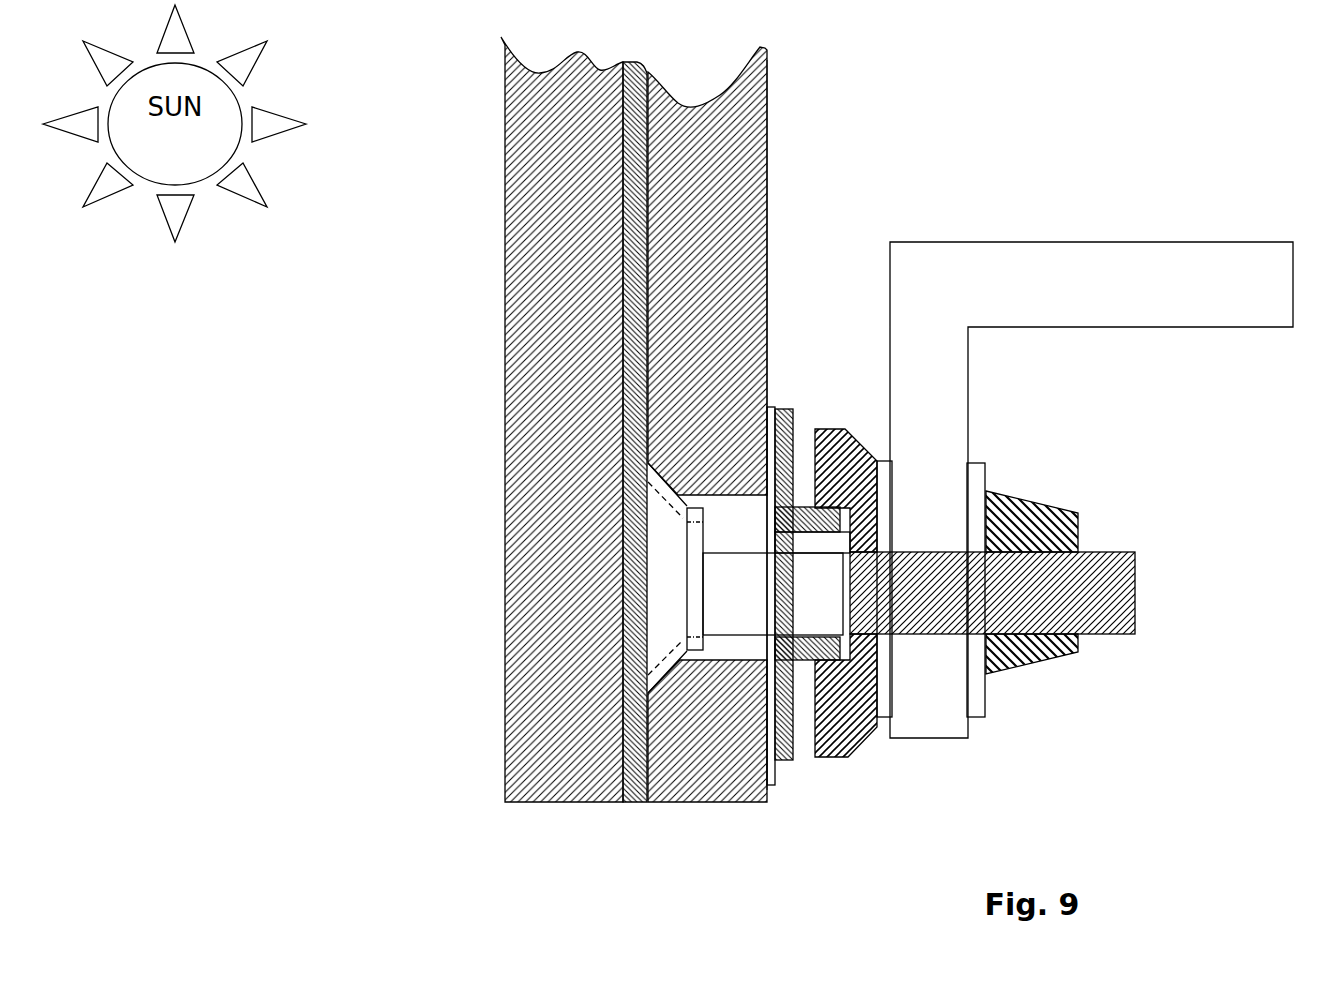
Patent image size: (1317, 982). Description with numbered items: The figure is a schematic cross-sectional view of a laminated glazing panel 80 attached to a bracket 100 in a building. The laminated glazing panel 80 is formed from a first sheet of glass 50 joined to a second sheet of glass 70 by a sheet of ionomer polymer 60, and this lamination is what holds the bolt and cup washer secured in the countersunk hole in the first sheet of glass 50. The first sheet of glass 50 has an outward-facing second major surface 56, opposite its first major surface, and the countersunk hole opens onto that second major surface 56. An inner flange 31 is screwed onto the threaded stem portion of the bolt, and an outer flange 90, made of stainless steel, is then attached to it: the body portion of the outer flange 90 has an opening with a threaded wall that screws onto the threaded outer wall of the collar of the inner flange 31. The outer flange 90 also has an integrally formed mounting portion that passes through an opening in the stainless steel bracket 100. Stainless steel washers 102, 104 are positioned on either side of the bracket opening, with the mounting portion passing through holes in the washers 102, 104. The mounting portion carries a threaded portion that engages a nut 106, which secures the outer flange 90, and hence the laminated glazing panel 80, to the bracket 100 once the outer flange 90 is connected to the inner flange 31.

The inner flange 31 is at (791, 390).
The first sheet of glass 50 is at (683, 787).
The second major surface 56 is at (772, 147).
The sheet of ionomer polymer 60 is at (632, 803).
The second sheet of glass 70 is at (550, 768).
The laminated glazing panel 80 is at (870, 196).
The outer flange 90 is at (889, 774).
The bracket 100 is at (1100, 262).
The washer 102 is at (885, 472).
The washer 104 is at (978, 472).
The nut 106 is at (1028, 520).